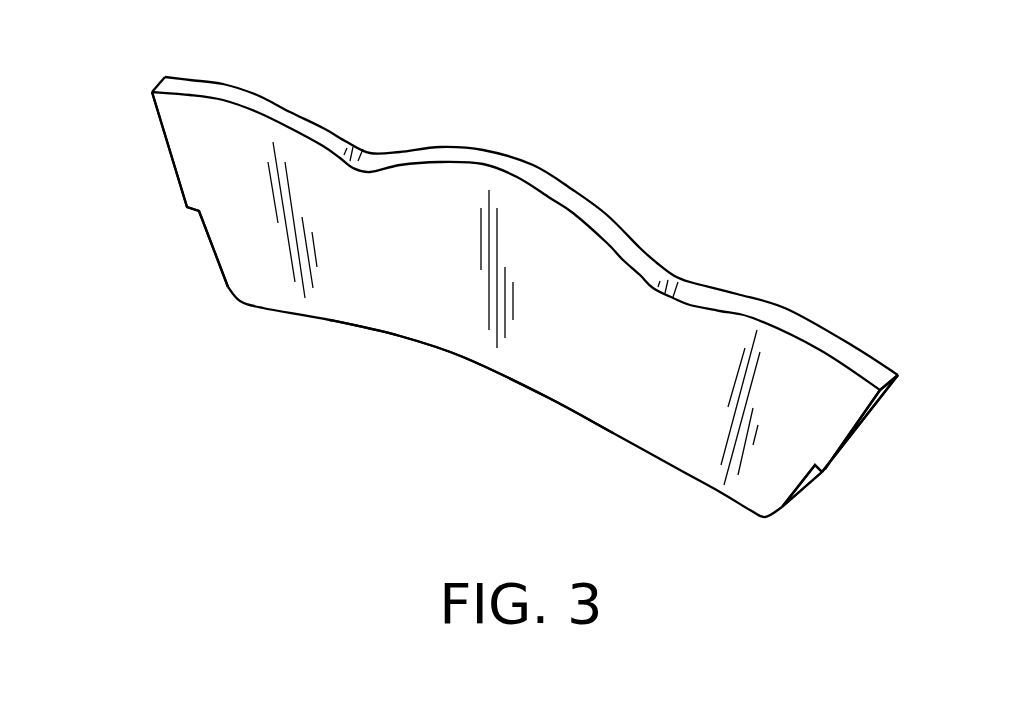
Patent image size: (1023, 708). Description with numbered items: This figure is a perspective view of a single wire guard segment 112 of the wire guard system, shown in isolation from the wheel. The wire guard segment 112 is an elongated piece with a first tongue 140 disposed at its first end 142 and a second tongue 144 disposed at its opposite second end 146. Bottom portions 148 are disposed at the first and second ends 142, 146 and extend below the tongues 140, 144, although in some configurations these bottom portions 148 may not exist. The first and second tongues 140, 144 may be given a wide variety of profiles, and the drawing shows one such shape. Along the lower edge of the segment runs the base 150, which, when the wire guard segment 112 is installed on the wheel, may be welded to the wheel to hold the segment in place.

The wire guard segment 112 is at (665, 102).
The first tongue 140 is at (158, 142).
The first end 142 is at (169, 207).
The second tongue 144 is at (866, 428).
The second end 146 is at (859, 455).
The bottom portions 148 is at (208, 245).
The base 150 is at (463, 358).